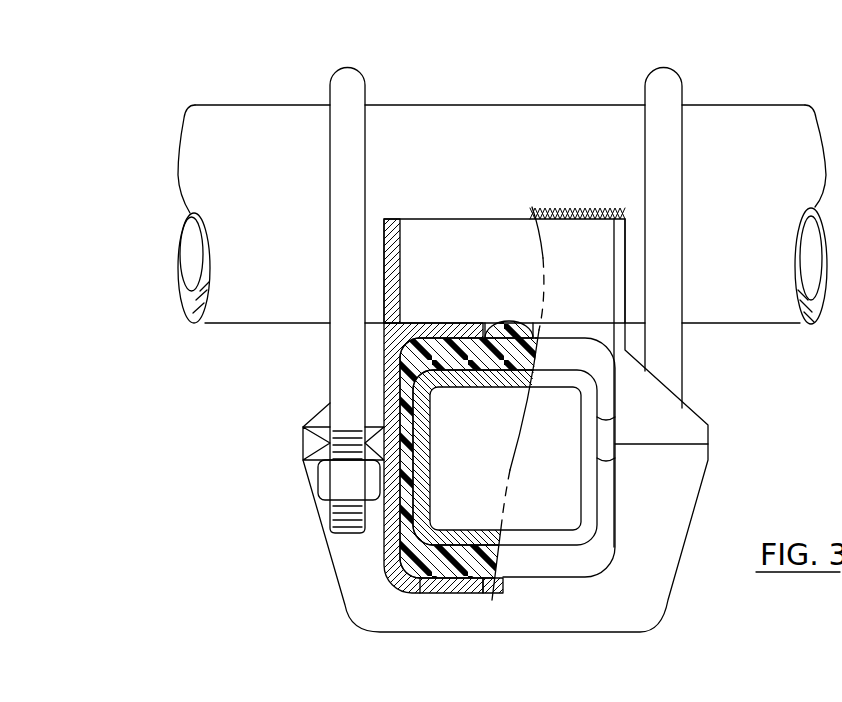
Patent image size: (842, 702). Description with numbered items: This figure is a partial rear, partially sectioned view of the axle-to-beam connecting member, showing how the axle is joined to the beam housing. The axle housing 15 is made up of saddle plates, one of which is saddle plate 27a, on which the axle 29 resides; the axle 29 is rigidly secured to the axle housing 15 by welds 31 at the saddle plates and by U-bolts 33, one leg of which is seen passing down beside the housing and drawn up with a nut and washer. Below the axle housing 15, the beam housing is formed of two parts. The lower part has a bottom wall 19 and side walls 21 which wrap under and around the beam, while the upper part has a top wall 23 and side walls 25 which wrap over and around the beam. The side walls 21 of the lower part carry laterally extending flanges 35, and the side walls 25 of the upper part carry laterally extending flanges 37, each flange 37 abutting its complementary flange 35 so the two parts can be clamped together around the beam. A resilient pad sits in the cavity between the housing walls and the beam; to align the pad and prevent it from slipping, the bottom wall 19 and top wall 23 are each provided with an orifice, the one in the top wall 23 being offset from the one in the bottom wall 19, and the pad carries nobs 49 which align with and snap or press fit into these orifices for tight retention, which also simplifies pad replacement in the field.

The axle housing 15 is at (389, 219).
The bottom wall 19 is at (397, 578).
The side walls 21 is at (390, 548).
The top wall 23 is at (448, 328).
The side walls 25 is at (395, 383).
The saddle plate 27a is at (388, 244).
The axle 29 is at (198, 163).
The welds 31 is at (600, 207).
The U-bolts 33 is at (345, 83).
The flanges 35 is at (312, 453).
The flanges 37 is at (312, 442).
The nobs 49 is at (505, 332).